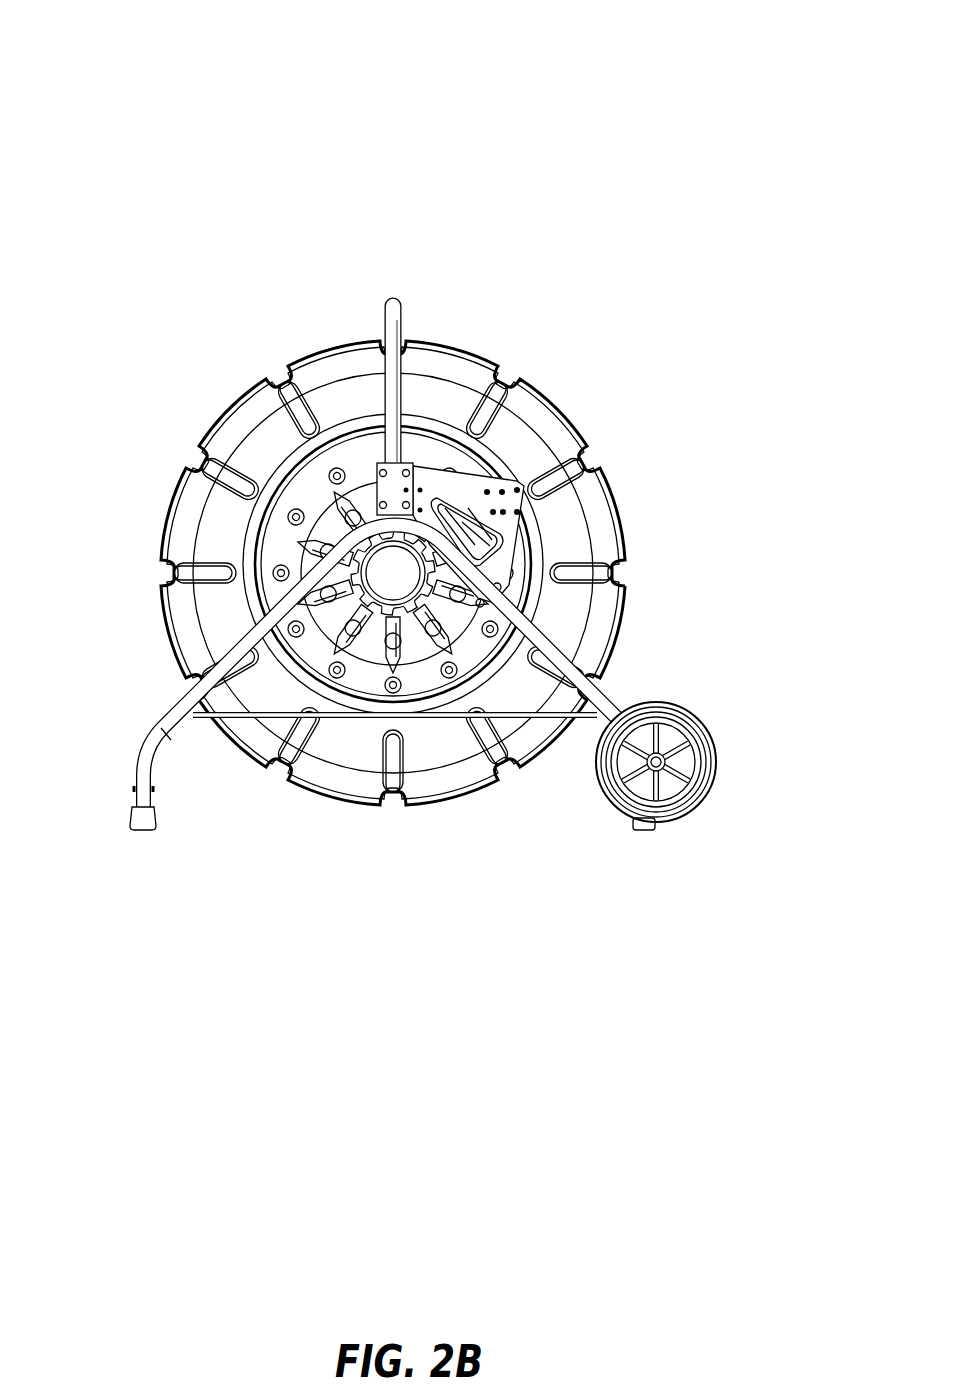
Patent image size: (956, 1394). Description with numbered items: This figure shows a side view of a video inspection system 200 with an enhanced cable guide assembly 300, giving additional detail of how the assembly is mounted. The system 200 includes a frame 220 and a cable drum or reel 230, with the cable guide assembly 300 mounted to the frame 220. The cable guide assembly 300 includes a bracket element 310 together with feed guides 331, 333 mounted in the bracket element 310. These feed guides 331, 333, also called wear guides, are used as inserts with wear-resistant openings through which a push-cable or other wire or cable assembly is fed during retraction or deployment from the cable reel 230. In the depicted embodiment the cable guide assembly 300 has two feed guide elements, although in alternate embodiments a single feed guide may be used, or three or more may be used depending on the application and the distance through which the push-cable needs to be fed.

The video inspection system 200 is at (719, 64).
The frame 220 is at (610, 692).
The cable drum or reel 230 is at (335, 623).
The cable guide assembly 300 is at (433, 493).
The bracket element 310 is at (477, 557).
The feed guide 331 is at (395, 518).
The feed guide 333 is at (507, 500).